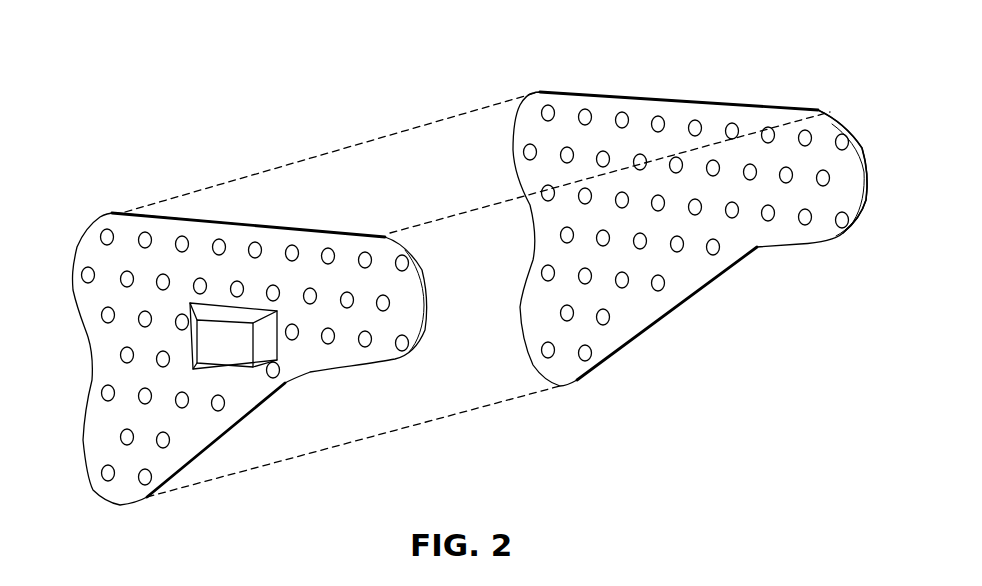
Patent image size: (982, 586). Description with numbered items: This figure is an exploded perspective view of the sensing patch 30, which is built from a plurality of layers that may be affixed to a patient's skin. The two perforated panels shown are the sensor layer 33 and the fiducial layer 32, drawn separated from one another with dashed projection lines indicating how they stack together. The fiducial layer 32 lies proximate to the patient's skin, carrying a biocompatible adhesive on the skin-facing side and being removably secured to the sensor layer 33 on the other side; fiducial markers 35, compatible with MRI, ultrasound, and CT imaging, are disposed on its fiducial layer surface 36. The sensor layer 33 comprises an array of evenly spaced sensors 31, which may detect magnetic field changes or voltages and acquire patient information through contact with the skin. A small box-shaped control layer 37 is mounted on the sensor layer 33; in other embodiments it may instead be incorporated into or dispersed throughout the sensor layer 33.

The sensing patch 30 is at (165, 110).
The sensors 31 is at (88, 275).
The fiducial layer 32 is at (647, 91).
The sensor layer 33 is at (93, 215).
The fiducial markers 35 is at (823, 178).
The fiducial layer surface 36 is at (820, 120).
The control layer 37 is at (226, 372).